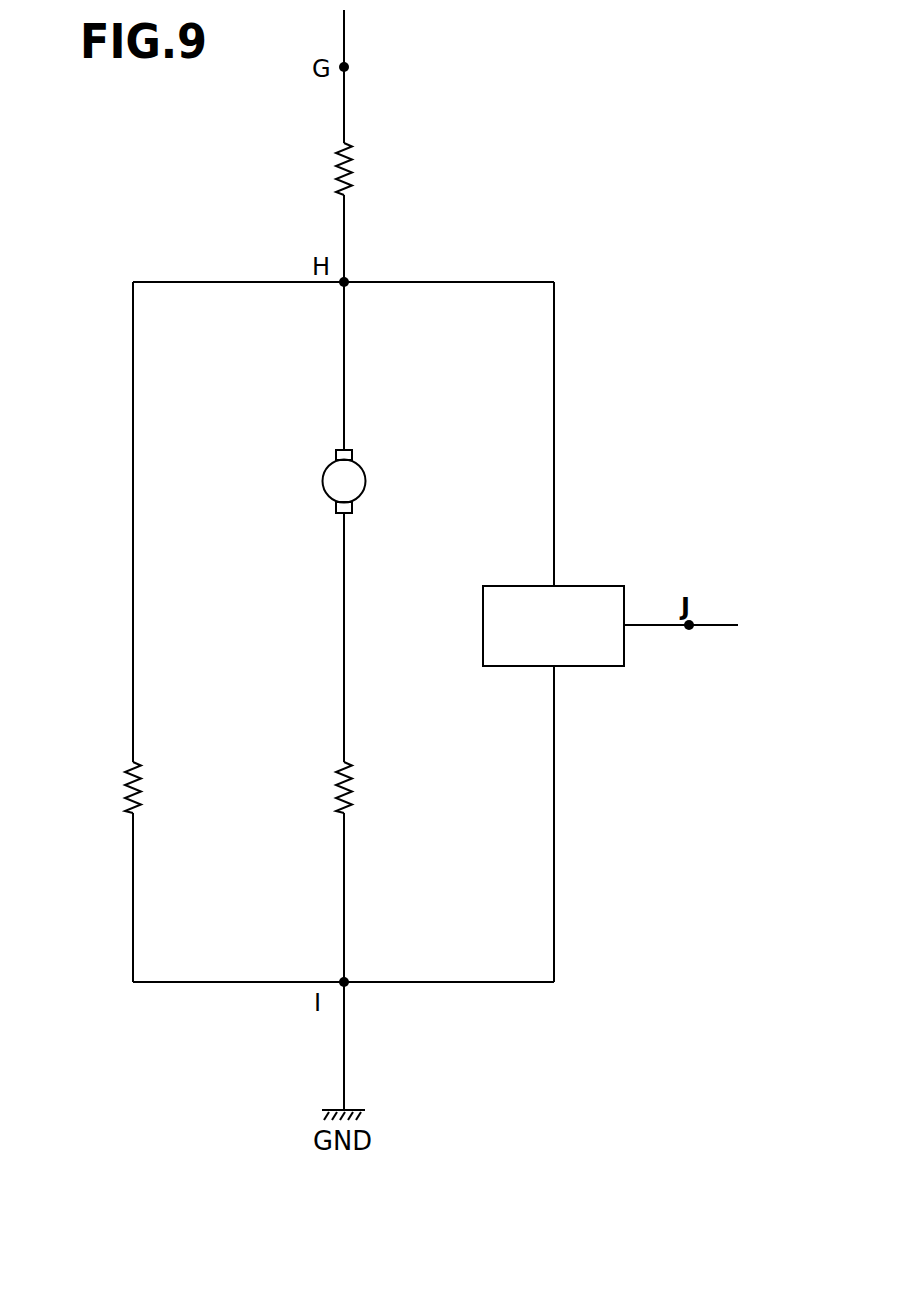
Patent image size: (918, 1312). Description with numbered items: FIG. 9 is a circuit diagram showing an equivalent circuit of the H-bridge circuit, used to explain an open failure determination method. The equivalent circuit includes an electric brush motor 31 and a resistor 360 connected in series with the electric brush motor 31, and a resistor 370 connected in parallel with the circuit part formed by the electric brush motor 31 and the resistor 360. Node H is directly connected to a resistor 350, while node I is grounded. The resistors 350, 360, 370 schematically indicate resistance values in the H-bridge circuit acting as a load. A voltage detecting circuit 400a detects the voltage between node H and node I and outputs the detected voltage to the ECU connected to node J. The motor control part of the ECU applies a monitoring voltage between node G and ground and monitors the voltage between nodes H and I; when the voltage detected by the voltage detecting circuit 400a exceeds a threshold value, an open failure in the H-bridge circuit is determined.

The resistor 350 is at (352, 168).
The electric brush motor 31 is at (322, 481).
The resistor 370 is at (141, 794).
The resistor 360 is at (352, 794).
The voltage detecting circuit 400a is at (598, 586).